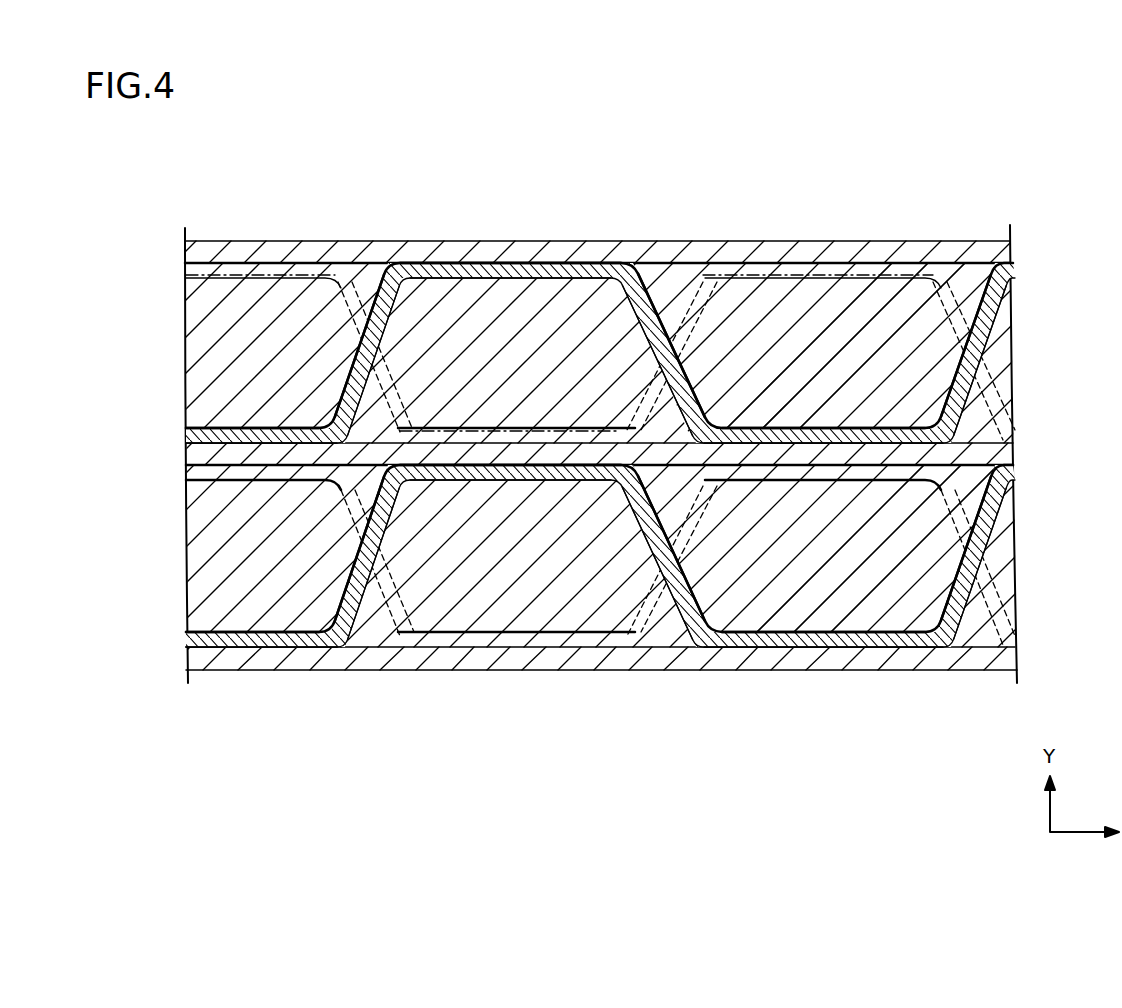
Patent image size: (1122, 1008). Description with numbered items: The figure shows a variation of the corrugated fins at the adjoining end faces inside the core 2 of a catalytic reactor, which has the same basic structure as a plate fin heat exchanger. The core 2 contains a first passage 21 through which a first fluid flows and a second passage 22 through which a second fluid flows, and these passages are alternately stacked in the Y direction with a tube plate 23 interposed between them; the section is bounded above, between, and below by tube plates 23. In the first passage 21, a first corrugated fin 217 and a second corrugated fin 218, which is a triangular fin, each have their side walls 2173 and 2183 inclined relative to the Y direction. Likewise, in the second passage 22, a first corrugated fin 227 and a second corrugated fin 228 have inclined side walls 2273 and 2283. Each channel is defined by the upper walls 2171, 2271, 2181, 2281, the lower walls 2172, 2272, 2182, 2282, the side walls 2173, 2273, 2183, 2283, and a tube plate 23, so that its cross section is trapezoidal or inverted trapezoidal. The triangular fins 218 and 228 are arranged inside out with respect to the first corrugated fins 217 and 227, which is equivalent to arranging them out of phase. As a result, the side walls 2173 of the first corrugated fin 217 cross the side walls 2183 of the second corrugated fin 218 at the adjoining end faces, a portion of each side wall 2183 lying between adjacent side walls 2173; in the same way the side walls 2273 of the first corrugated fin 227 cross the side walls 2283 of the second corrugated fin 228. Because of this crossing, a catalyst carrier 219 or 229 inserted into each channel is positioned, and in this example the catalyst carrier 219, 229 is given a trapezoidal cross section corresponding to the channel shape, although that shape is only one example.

The core 2 is at (1012, 180).
The first passage 21 is at (1044, 551).
The second passage 22 is at (1044, 341).
The tube plate 23 is at (1003, 250).
The first corrugated fin 217 is at (600, 634).
The upper wall 2171 is at (553, 480).
The lower wall 2172 is at (792, 647).
The side wall 2173 is at (664, 615).
The second corrugated fin 218 is at (553, 625).
The upper wall 2181 is at (197, 473).
The lower wall 2182 is at (488, 640).
The side wall 2183 is at (327, 600).
The catalyst carrier 219 is at (848, 600).
The first corrugated fin 227 is at (600, 307).
The upper wall 2271 is at (538, 263).
The lower wall 2272 is at (263, 440).
The side wall 2273 is at (365, 320).
The second corrugated fin 228 is at (600, 291).
The upper wall 2281 is at (876, 278).
The lower wall 2282 is at (600, 428).
The side wall 2283 is at (330, 276).
The catalyst carrier 229 is at (917, 300).